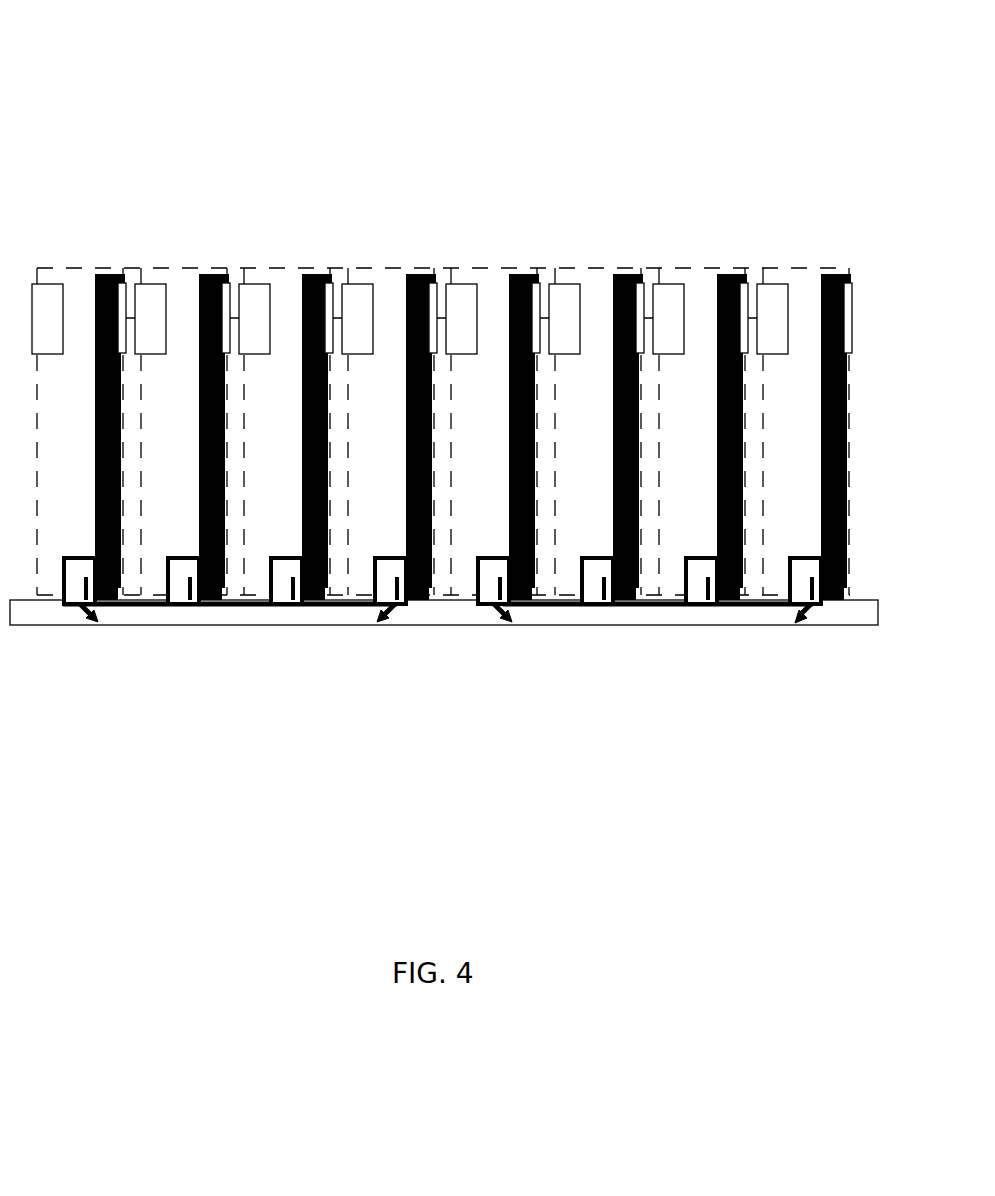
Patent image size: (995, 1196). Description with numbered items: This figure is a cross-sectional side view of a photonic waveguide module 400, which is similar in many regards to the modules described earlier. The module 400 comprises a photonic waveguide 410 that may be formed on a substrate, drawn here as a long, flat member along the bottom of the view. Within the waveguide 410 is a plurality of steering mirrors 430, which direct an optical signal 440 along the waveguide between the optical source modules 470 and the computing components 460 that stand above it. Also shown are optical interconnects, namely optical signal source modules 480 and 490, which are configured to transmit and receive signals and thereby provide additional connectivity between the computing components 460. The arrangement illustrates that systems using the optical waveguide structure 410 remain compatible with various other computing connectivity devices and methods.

The photonic waveguide module 400 is at (520, 192).
The photonic waveguide 410 is at (25, 615).
The steering mirrors 430 is at (381, 615).
The optical signal 440 is at (160, 615).
The computing components 460 is at (108, 272).
The optical source modules 470 is at (63, 560).
The optical signal source module 480 is at (329, 282).
The optical signal source module 490 is at (373, 283).